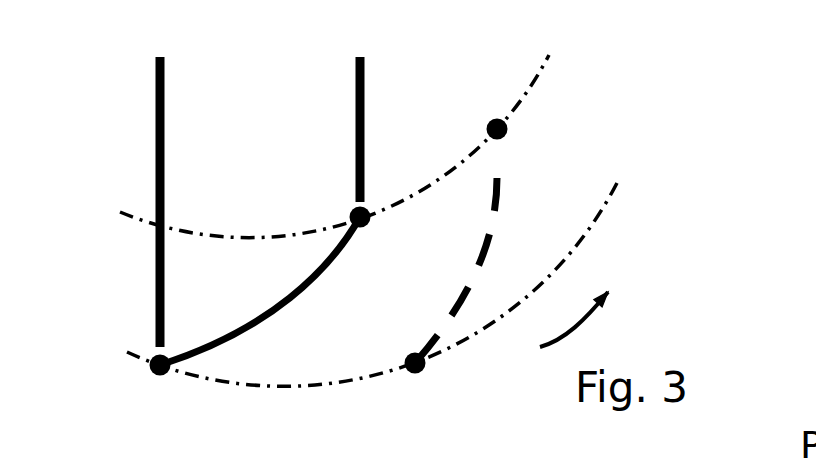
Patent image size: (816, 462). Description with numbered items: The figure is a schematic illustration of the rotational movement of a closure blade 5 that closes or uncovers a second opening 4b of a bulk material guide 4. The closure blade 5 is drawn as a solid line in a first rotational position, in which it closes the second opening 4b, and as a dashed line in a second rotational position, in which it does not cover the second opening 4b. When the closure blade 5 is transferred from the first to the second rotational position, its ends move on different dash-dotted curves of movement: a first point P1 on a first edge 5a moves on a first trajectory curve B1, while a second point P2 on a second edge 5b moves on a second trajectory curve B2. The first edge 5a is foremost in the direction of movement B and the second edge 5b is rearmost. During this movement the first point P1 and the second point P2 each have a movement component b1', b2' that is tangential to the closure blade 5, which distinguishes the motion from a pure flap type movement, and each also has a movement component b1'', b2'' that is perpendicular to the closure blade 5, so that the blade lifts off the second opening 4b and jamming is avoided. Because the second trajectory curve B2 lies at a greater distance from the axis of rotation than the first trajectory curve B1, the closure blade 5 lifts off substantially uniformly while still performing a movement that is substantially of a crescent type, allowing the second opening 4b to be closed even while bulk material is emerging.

The bulk material guide 4 is at (165, 102).
The second opening 4b is at (238, 300).
The closure blade 5 is at (310, 288).
The first edge 5a is at (390, 127).
The second edge 5b is at (147, 370).
The first point P1 is at (372, 222).
The second point P2 is at (162, 376).
The first trajectory curve B1 is at (530, 97).
The second trajectory curve B2 is at (602, 222).
The direction of movement B is at (598, 310).
The movement component perpendicular to the closure blade b1'' is at (471, 85).
The movement component tangential to the closure blade b1' is at (554, 166).
The movement component perpendicular to the closure blade b2'' is at (338, 353).
The movement component tangential to the closure blade b2' is at (463, 393).